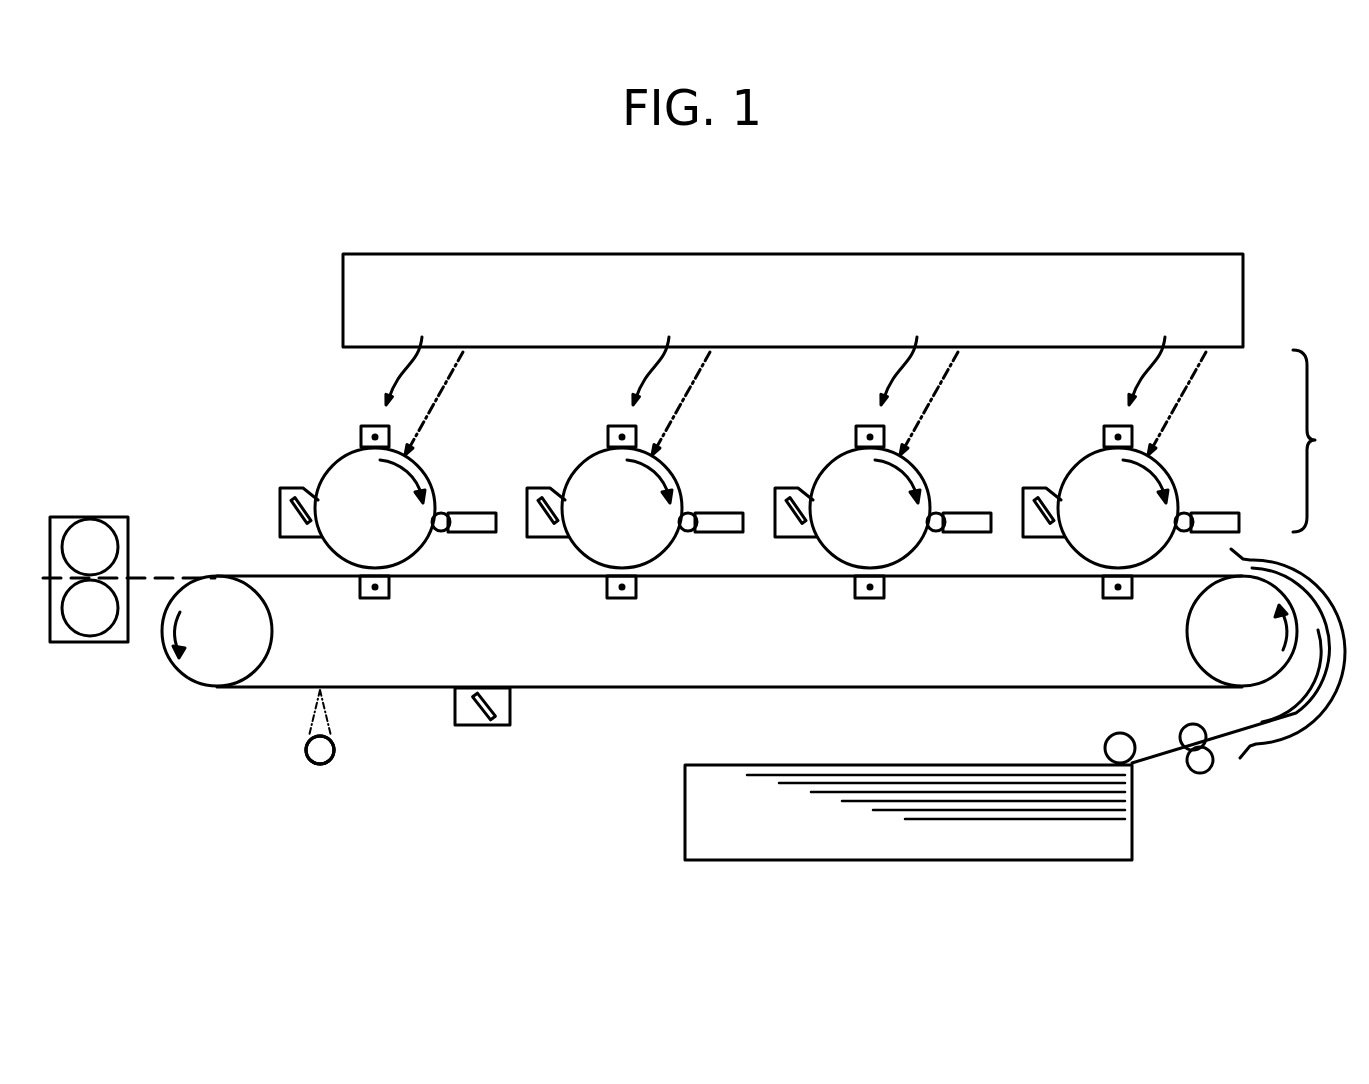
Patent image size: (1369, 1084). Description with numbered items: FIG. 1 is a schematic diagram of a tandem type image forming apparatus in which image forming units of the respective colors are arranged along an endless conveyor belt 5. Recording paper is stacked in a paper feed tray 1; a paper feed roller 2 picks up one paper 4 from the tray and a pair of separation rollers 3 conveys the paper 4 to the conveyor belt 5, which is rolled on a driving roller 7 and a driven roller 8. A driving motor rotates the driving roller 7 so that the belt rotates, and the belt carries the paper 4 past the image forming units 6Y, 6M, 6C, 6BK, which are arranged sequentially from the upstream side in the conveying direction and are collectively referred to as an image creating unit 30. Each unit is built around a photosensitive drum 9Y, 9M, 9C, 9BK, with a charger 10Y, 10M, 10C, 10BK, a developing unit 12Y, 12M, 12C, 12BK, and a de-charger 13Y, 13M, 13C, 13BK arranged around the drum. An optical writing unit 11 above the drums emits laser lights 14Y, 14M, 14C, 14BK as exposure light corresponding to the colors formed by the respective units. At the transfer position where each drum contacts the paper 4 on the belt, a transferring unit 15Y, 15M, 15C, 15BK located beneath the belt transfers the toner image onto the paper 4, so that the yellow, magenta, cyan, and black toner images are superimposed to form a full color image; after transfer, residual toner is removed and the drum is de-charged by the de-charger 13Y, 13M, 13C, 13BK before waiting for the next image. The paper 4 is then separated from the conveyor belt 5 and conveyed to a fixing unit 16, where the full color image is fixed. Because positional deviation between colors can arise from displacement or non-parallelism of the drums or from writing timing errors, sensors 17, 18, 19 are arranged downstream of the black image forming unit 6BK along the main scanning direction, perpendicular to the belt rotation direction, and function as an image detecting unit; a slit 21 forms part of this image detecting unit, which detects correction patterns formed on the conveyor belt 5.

The paper feed tray 1 is at (920, 860).
The paper feed roller 2 is at (1104, 748).
The pair of separation rollers 3 is at (1199, 773).
The paper 4 is at (948, 774).
The conveyor belt 5 is at (633, 688).
The black image forming unit 6BK is at (419, 356).
The cyan image forming unit 6C is at (661, 356).
The magenta image forming unit 6M is at (910, 356).
The yellow image forming unit 6Y is at (1156, 356).
The driving roller 7 is at (207, 682).
The driven roller 8 is at (1262, 673).
The photosensitive drum 9BK is at (413, 508).
The photosensitive drum 9C is at (651, 508).
The photosensitive drum 9M is at (901, 508).
The photosensitive drum 9Y is at (1146, 508).
The charger 10BK is at (350, 407).
The charger 10C is at (601, 407).
The charger 10M is at (848, 407).
The charger 10Y is at (1098, 407).
The optical writing unit 11 is at (833, 253).
The developing unit 12BK is at (466, 490).
The developing unit 12C is at (711, 490).
The developing unit 12M is at (959, 490).
The developing unit 12Y is at (1207, 490).
The de-charger 13BK is at (290, 479).
The de-charger 13C is at (540, 479).
The de-charger 13M is at (787, 479).
The de-charger 13Y is at (1037, 479).
The laser light 14BK is at (482, 403).
The laser light 14C is at (720, 403).
The laser light 14M is at (971, 403).
The laser light 14Y is at (1215, 403).
The transferring unit 15BK is at (373, 618).
The transferring unit 15C is at (619, 618).
The transferring unit 15M is at (868, 618).
The transferring unit 15Y is at (1116, 618).
The fixing unit 16 is at (72, 519).
The sensor 17 is at (320, 764).
The sensor 18 is at (320, 750).
The sensor 19 is at (320, 750).
The slit 21 is at (478, 725).
The image creating unit 30 is at (1323, 441).